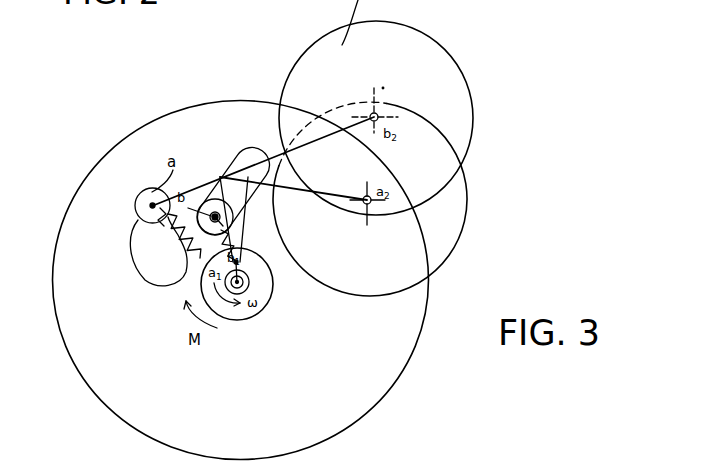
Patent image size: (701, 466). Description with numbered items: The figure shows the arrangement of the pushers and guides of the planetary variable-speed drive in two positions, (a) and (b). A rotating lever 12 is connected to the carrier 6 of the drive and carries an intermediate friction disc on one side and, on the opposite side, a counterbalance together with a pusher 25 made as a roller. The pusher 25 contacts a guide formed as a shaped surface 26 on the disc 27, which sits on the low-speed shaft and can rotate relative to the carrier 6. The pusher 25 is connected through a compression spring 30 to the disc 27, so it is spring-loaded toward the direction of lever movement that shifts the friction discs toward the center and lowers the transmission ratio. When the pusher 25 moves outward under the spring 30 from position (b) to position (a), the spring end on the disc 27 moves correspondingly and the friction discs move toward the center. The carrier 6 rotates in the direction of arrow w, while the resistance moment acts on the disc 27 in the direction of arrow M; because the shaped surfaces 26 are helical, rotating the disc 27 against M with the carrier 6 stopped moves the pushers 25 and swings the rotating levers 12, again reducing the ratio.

The carrier 6 is at (241, 228).
The rotating lever 12 is at (281, 155).
The pusher 25 is at (136, 201).
The shaped surface 26 is at (134, 262).
The disc 27 is at (370, 398).
The spring 30 is at (198, 262).